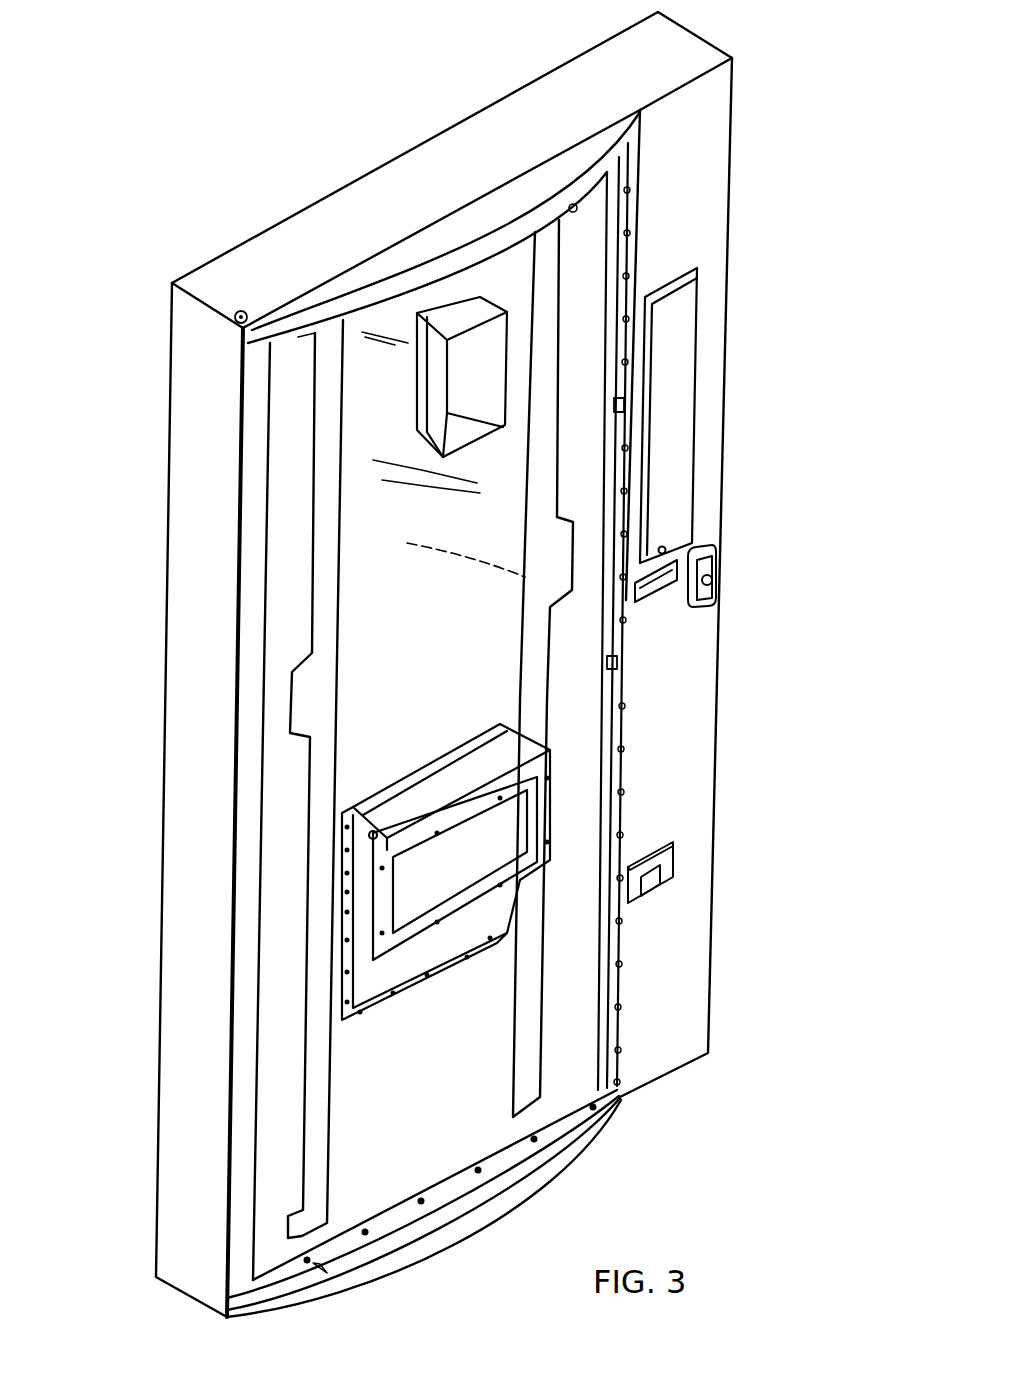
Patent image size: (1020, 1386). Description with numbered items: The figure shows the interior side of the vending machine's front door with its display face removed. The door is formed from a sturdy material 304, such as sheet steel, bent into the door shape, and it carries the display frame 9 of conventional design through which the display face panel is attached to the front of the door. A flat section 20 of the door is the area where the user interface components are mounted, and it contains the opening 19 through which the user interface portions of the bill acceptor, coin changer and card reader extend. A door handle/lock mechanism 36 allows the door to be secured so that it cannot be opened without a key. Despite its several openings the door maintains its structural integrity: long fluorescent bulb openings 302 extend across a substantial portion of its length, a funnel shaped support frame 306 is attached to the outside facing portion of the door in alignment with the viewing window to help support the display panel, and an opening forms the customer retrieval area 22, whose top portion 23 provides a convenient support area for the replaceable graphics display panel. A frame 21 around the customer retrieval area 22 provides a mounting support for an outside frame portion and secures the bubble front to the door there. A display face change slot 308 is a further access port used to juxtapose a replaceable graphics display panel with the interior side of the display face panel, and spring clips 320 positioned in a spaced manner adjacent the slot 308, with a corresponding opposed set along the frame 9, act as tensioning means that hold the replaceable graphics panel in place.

The perimeter frame 9 is at (268, 335).
The opening 19 is at (690, 368).
The flat section 20 is at (730, 128).
The frame 21 is at (552, 772).
The customer retrieval area 22 is at (482, 862).
The top portion of customer retrieval area 23 is at (515, 734).
The door handle/lock mechanism 36 is at (718, 560).
The fluorescent bulb openings 302 is at (327, 413).
The sturdy material 304 is at (378, 598).
The funnel shaped support frame 306 is at (462, 314).
The display face change slot 308 is at (620, 290).
The spring clips 320 is at (622, 404).